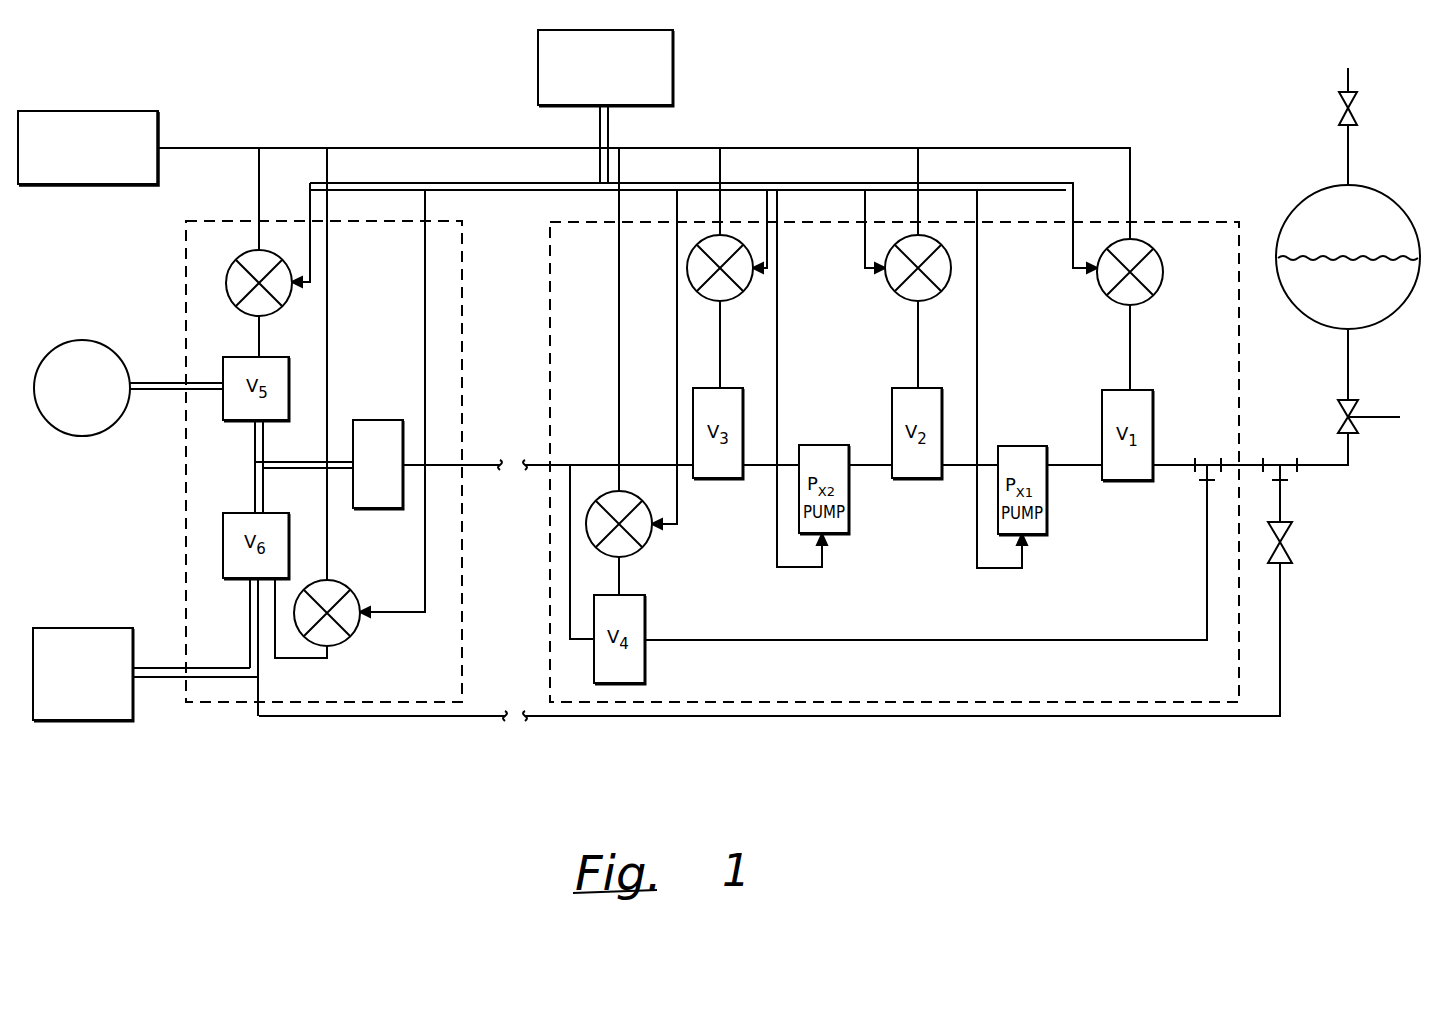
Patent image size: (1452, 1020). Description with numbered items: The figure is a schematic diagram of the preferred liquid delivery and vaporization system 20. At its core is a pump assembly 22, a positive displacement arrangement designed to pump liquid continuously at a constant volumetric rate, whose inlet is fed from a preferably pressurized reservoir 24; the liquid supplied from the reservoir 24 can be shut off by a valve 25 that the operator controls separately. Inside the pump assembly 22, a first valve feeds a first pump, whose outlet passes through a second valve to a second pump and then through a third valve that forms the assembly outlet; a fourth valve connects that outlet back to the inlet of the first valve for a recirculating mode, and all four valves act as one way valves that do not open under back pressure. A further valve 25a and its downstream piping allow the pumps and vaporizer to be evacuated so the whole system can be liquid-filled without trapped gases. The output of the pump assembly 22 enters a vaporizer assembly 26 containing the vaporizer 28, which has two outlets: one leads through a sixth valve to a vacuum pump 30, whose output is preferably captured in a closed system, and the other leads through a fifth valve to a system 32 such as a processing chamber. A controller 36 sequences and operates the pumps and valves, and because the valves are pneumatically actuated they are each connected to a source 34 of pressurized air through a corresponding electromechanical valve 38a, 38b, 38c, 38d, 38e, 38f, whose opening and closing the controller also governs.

The vaporization system 20 is at (1042, 100).
The pump assembly 22 is at (1195, 222).
The reservoir 24 is at (1400, 208).
The valve 25 is at (1352, 414).
The valve 25a is at (1290, 530).
The vaporizer assembly 26 is at (222, 220).
The vaporizer 28 is at (378, 420).
The vacuum pump 30 is at (108, 628).
The system 32 is at (103, 346).
The source of pressurized air 34 is at (145, 111).
The controller 36 is at (673, 60).
The electromechanical valve 38a is at (1150, 297).
The electromechanical valve 38b is at (894, 296).
The electromechanical valve 38c is at (745, 294).
The electromechanical valve 38d is at (642, 548).
The electromechanical valve 38e is at (243, 256).
The electromechanical valve 38f is at (352, 637).